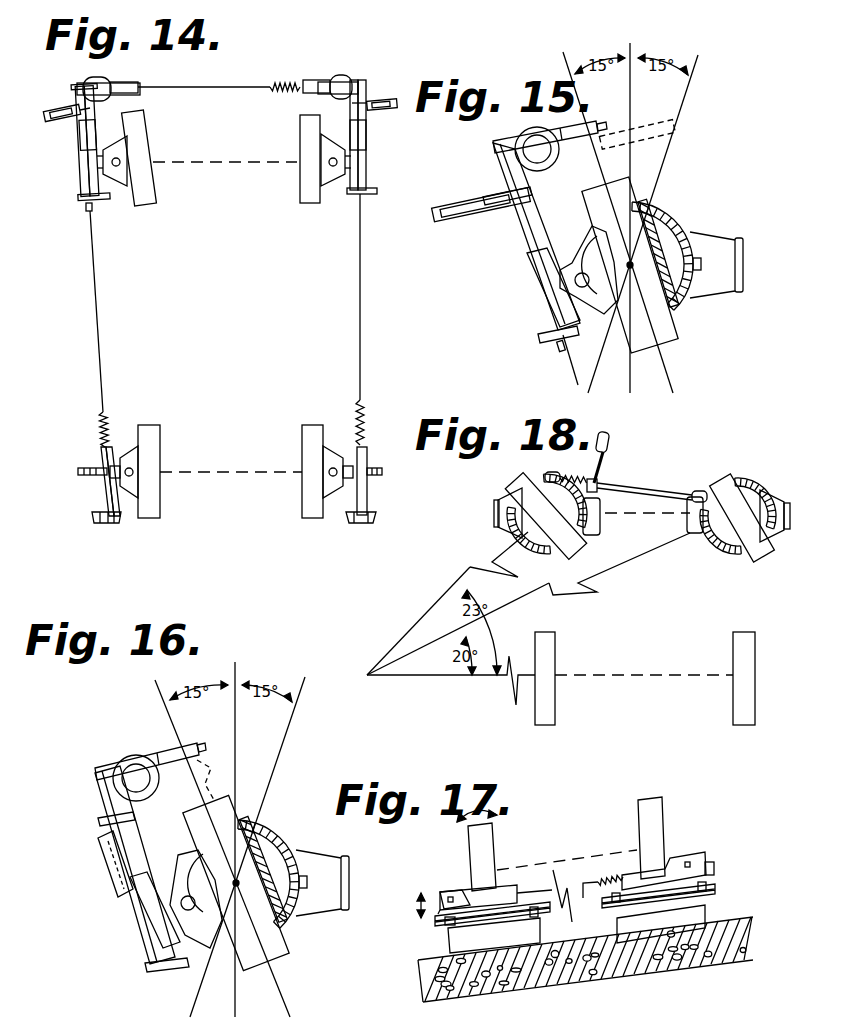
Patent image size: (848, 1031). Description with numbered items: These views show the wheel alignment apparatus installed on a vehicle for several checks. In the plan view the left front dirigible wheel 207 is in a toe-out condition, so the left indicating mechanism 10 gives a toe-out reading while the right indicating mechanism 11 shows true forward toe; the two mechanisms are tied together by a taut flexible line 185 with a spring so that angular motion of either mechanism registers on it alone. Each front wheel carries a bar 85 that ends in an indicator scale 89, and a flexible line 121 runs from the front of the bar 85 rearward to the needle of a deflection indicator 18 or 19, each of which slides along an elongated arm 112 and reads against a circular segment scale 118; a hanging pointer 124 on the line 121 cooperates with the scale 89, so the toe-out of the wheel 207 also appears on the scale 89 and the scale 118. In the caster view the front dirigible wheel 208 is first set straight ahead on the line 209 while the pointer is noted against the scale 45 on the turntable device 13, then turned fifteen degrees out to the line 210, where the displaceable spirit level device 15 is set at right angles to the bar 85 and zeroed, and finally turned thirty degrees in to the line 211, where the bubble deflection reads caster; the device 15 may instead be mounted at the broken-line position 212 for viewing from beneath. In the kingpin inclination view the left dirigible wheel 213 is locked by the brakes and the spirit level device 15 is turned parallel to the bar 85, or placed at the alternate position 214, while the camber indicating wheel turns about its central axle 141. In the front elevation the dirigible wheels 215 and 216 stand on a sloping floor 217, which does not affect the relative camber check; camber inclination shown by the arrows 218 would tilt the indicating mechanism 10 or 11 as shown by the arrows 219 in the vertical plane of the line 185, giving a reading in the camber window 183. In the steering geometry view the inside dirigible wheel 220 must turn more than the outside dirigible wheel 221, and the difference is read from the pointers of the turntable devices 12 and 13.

In FIG. 14, the indicating mechanism 10 is at (130, 92).
In FIG. 15, the indicating mechanism 10 is at (574, 138).
In FIG. 17, the indicating mechanism 10 is at (700, 860).
In FIG. 14, the indicating mechanism 11 is at (325, 84).
In FIG. 17, the indicating mechanism 11 is at (510, 888).
In FIG. 18, the turntable device 12 is at (745, 487).
In FIG. 15, the turntable device 13 is at (648, 218).
In FIG. 16, the turntable device 13 is at (268, 861).
In FIG. 18, the turntable device 13 is at (540, 487).
In FIG. 15, the displaceable spirit level device 15 is at (484, 214).
In FIG. 16, the displaceable spirit level device 15 is at (108, 893).
In FIG. 14, the deflection indicator 18 is at (100, 476).
In FIG. 14, the deflection indicator 19 is at (368, 472).
In FIG. 15, the circular segment scale member 45 is at (688, 230).
In FIG. 16, the circular segment scale member 45 is at (279, 871).
In FIG. 15, the bar 85 is at (530, 228).
In FIG. 16, the bar 85 is at (130, 850).
In FIG. 14, the indicator scale 89 is at (97, 198).
In FIG. 14, the elongated arm 112 is at (78, 472).
In FIG. 14, the circular segment scale 118 is at (110, 523).
In FIG. 14, the flexible line 121 is at (98, 344).
In FIG. 15, the flexible line 121 is at (574, 380).
In FIG. 14, the hanging pointer 124 is at (86, 208).
In FIG. 15, the hanging pointer 124 is at (558, 347).
In FIG. 15, the central axle 141 is at (700, 264).
In FIG. 16, the central axle 141 is at (340, 883).
In FIG. 17, the window 183 is at (452, 894).
In FIG. 17, the flexible line 185 is at (582, 898).
In FIG. 14, the left front dirigible wheel 207 is at (150, 190).
In FIG. 15, the front dirigible wheel 208 is at (668, 326).
In FIG. 15, the line 209 is at (631, 95).
In FIG. 15, the line 210 is at (578, 92).
In FIG. 15, the line 211 is at (683, 111).
In FIG. 15, the alternate position 212 is at (648, 142).
In FIG. 16, the left dirigible wheel 213 is at (258, 890).
In FIG. 16, the alternate position 214 is at (213, 771).
In FIG. 17, the dirigible wheel 215 is at (494, 838).
In FIG. 17, the dirigible wheel 216 is at (664, 820).
In FIG. 17, the floor 217 is at (722, 922).
In FIG. 17, the arrows 218 is at (462, 818).
In FIG. 17, the arrows 219 is at (420, 915).
In FIG. 18, the inside dirigible wheel 220 is at (580, 547).
In FIG. 18, the outside dirigible wheel 221 is at (748, 553).